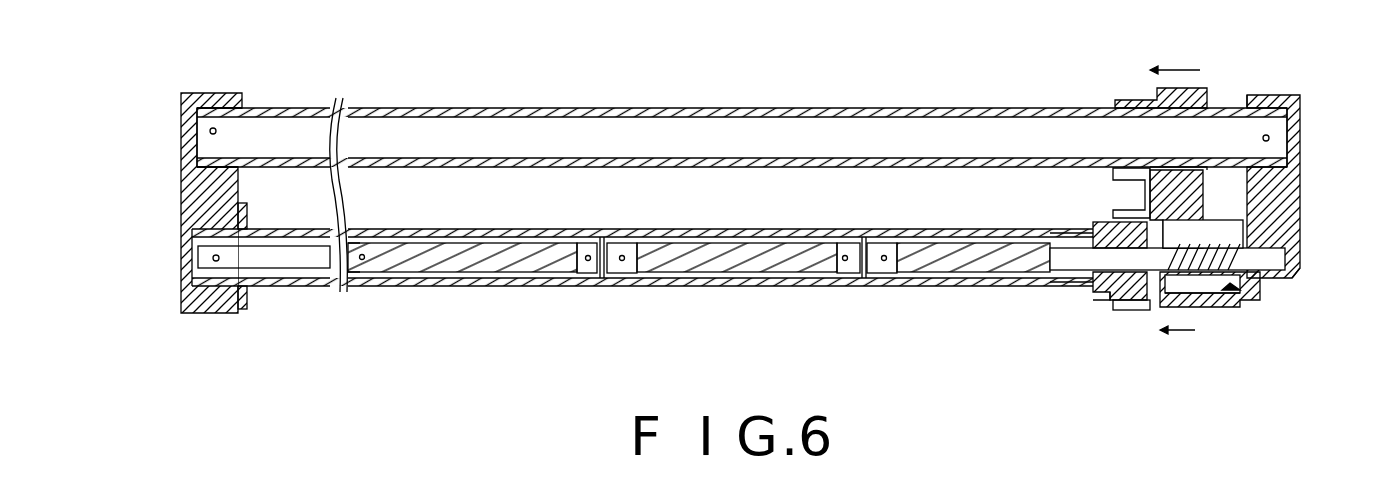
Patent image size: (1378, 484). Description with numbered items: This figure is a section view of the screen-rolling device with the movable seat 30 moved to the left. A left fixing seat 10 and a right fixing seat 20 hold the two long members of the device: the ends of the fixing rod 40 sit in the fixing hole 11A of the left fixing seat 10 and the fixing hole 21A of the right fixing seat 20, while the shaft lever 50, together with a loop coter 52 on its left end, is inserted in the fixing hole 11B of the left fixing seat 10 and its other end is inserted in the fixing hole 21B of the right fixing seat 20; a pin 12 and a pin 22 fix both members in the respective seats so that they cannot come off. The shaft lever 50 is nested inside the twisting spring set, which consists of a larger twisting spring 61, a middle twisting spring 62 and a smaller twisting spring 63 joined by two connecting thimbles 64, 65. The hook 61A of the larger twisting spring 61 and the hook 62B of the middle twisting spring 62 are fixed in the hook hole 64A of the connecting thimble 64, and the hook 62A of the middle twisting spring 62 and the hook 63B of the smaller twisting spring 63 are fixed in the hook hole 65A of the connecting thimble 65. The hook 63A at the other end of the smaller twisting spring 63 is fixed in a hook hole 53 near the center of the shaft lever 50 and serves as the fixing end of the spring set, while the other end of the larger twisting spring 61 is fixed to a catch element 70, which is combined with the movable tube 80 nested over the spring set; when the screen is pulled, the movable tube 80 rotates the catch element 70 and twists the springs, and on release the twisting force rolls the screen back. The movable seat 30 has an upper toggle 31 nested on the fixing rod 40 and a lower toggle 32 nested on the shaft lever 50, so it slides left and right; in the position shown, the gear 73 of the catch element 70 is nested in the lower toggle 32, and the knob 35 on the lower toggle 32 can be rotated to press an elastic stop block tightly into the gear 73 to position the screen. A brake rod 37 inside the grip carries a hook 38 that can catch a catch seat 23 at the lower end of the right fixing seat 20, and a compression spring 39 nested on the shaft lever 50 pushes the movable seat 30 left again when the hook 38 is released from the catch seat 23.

The left fixing seat 10 is at (181, 205).
The fixing hole 11A is at (243, 98).
The fixing hole 11B is at (224, 290).
The pin 12 is at (210, 131).
The right fixing seat 20 is at (1300, 186).
The fixing hole 21A is at (1246, 100).
The fixing hole 21B is at (1292, 278).
The pin 22 is at (1270, 138).
The catch seat 23 is at (1272, 292).
The movable seat 30 is at (1190, 354).
The upper toggle 31 is at (1120, 100).
The lower toggle 32 is at (1100, 302).
The knob 35 is at (1127, 310).
The brake rod 37 is at (1210, 306).
The hook 38 is at (1242, 308).
The compression spring 39 is at (1203, 241).
The fixing rod 40 is at (660, 107).
The shaft lever 50 is at (319, 262).
The loop coter 52 is at (245, 305).
The hook hole 53 is at (366, 284).
The larger twisting spring 61 is at (975, 250).
The hook 61A is at (886, 256).
The middle twisting spring 62 is at (710, 276).
The hook 62A is at (622, 256).
The hook 62B is at (843, 256).
The smaller twisting spring 63 is at (475, 250).
The hook 63A is at (366, 254).
The hook 63B is at (586, 256).
The connecting thimble 64 is at (852, 284).
The hook hole 64A is at (882, 284).
The connecting thimble 65 is at (588, 284).
The hook hole 65A is at (621, 284).
The catch element 70 is at (1097, 224).
The gear 73 is at (1115, 210).
The movable tube 80 is at (730, 230).